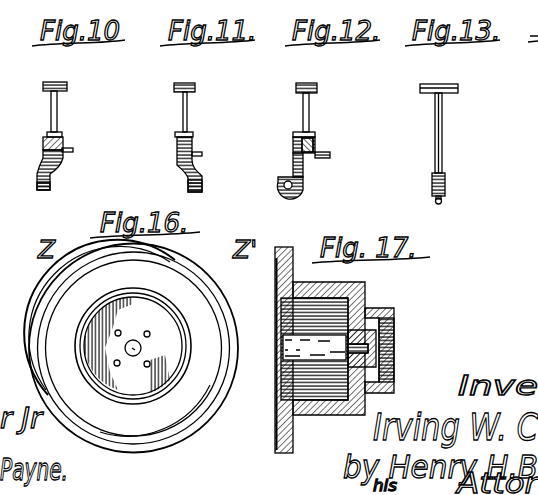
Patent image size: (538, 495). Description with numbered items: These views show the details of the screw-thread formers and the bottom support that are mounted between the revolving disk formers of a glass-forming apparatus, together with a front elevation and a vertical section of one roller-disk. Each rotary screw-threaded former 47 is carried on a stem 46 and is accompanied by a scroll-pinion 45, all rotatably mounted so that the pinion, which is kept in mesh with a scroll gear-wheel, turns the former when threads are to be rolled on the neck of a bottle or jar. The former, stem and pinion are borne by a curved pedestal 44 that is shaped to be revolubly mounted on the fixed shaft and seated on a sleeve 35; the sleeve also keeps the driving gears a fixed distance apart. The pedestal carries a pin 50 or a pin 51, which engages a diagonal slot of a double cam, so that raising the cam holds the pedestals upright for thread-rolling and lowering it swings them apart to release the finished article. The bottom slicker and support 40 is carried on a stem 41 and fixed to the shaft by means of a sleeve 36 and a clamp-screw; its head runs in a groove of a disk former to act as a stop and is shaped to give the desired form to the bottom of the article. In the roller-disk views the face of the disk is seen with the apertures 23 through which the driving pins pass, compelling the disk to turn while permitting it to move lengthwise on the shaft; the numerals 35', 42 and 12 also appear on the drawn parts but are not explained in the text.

In FIG. 10, the rotary screw-threaded former 47 is at (67, 82).
In FIG. 11, the rotary screw-threaded former 47 is at (198, 83).
In FIG. 12, the rotary screw-threaded former 47 is at (319, 84).
In FIG. 10, the stem 41 is at (69, 111).
In FIG. 13, the stem 41 is at (453, 133).
In FIG. 10, the scroll-pinion 45 is at (66, 139).
In FIG. 11, the scroll-pinion 45 is at (198, 137).
In FIG. 12, the scroll-pinion 45 is at (317, 135).
In FIG. 10, the pin 50 is at (85, 153).
In FIG. 10, the curved pedestal 44 is at (59, 170).
In FIG. 11, the curved pedestal 44 is at (182, 164).
In FIG. 12, the curved pedestal 44 is at (311, 157).
In FIG. 10, the sleeve 35 is at (54, 195).
In FIG. 11, the stem 46 is at (200, 112).
In FIG. 12, the stem 46 is at (319, 112).
In FIG. 11, the pin 51 is at (216, 157).
In FIG. 12, the pin 51 is at (338, 157).
In FIG. 11, the lower end 35' is at (207, 190).
In FIG. 12, the lower end 35' is at (301, 188).
In FIG. 13, the bottom slicker and support 40 is at (452, 90).
In FIG. 13, the sleeve 36 is at (451, 185).
In FIG. 13, the tip 42 is at (438, 206).
In FIG. 16, the aperture 23 is at (150, 334).
In FIG. 17, the aperture 23 is at (394, 330).
In FIG. 17, the projection 12 is at (392, 344).